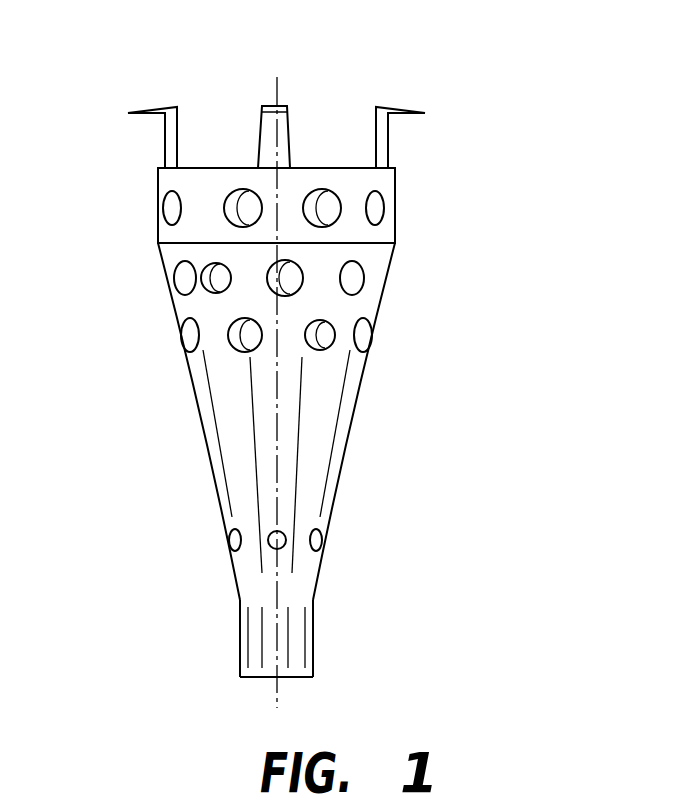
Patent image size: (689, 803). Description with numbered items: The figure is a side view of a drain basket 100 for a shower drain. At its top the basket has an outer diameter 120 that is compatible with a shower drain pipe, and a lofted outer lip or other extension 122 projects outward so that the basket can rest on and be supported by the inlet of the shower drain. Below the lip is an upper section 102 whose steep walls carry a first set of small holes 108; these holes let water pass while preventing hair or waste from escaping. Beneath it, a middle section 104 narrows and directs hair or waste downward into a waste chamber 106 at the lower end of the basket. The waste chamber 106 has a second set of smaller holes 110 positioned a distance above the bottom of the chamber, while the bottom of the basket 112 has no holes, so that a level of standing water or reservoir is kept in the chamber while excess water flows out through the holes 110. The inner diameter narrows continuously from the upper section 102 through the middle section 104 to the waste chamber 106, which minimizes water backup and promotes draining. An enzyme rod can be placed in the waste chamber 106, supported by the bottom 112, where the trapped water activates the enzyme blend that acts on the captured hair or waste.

The basket 100 is at (500, 86).
The upper section 102 is at (418, 170).
The middle section 104 is at (418, 387).
The waste chamber 106 is at (418, 553).
The first set of small holes 108 is at (170, 227).
The second set of smaller holes 110 is at (240, 531).
The bottom of the basket 112 is at (252, 678).
The outer diameter 120 is at (383, 97).
The lofted outer lip or other extension 122 is at (152, 108).